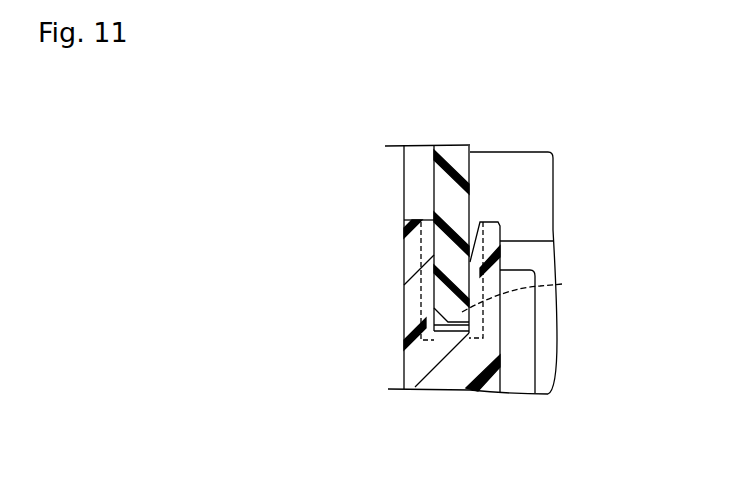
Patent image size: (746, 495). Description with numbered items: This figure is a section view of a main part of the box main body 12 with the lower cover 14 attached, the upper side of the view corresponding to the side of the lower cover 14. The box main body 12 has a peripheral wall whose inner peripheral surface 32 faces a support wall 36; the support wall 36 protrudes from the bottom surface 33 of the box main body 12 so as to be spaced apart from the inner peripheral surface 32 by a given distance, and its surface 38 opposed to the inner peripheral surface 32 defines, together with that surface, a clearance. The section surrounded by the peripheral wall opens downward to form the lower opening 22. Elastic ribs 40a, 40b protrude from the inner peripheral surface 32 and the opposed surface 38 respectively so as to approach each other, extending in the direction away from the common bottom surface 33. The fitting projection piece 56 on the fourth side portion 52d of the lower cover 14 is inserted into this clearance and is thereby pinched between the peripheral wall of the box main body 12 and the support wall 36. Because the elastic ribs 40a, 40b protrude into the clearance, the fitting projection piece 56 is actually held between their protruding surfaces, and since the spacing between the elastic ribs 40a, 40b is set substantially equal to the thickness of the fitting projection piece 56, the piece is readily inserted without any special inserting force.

The lower cover 14 is at (495, 114).
The fitting projection piece 56 is at (457, 163).
The fourth side portion 52d is at (478, 154).
The lower opening 22 is at (432, 240).
The support wall 36 is at (487, 233).
The elastic rib 40a is at (426, 248).
The elastic rib 40b is at (474, 290).
The inner peripheral surface 32 is at (412, 282).
The opposed surface 38 is at (562, 284).
The bottom surface 33 is at (455, 334).
The box main body 12 is at (490, 405).